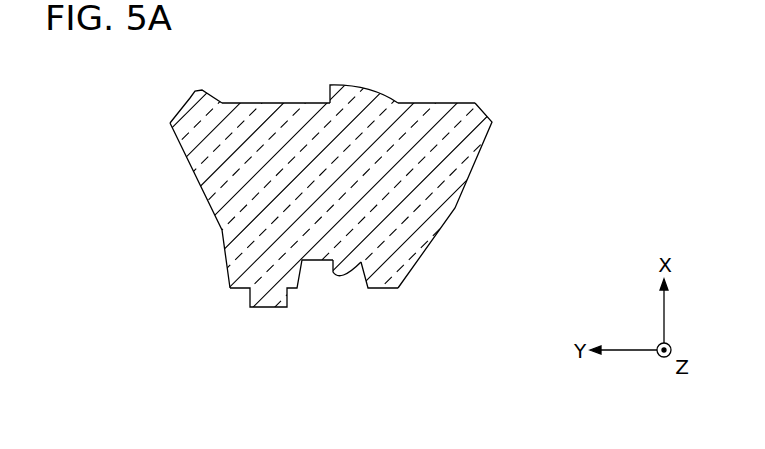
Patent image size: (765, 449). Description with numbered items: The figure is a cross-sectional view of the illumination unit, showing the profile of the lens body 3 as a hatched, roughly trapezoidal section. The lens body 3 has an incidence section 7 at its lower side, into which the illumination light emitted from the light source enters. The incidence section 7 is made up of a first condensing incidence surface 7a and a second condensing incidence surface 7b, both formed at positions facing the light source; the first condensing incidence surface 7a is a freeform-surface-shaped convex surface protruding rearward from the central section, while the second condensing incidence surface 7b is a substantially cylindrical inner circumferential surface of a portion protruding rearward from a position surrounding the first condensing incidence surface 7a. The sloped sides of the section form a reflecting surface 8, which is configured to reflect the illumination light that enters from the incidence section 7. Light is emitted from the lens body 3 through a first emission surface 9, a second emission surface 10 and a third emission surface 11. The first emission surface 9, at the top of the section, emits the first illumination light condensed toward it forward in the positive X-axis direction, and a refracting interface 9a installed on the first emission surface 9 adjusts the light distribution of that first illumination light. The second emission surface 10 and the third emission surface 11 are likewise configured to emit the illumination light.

The lens body 3 is at (470, 86).
The incidence section 7 is at (317, 347).
The first condensing incidence surface 7a is at (341, 274).
The second condensing incidence surface 7b is at (363, 268).
The reflecting surface 8 is at (190, 170).
The first emission surface 9 is at (418, 103).
The refracting interface 9a is at (357, 88).
The second emission surface 10 is at (225, 265).
The third emission surface 11 is at (213, 97).